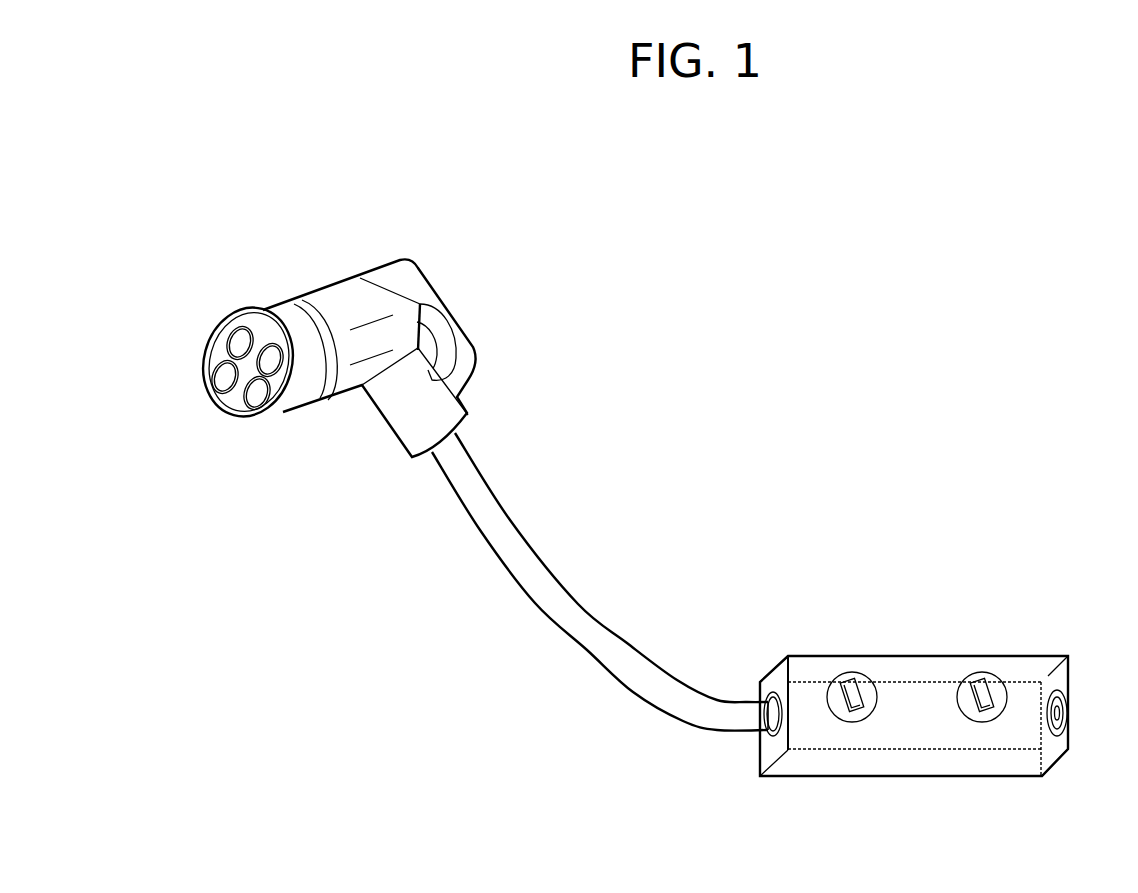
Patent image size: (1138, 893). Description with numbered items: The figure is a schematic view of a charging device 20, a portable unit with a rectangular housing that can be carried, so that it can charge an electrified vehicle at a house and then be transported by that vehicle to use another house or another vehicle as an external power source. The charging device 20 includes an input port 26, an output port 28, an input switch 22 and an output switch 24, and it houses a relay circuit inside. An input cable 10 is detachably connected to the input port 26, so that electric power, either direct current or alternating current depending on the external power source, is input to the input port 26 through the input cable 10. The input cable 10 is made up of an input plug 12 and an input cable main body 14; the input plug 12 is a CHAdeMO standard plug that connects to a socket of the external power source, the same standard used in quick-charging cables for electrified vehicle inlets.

The input cable 10 is at (817, 633).
The input plug 12 is at (250, 313).
The input cable main body 14 is at (533, 600).
The charging device 20 is at (922, 655).
The input switch 22 is at (852, 672).
The output switch 24 is at (982, 672).
The input port 26 is at (758, 734).
The output port 28 is at (1068, 733).